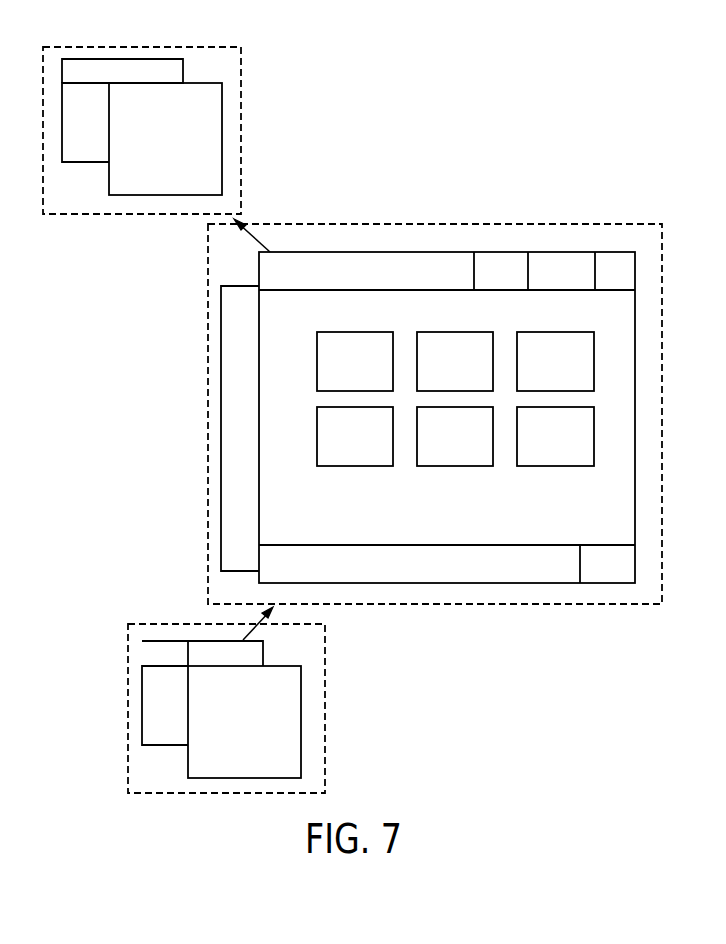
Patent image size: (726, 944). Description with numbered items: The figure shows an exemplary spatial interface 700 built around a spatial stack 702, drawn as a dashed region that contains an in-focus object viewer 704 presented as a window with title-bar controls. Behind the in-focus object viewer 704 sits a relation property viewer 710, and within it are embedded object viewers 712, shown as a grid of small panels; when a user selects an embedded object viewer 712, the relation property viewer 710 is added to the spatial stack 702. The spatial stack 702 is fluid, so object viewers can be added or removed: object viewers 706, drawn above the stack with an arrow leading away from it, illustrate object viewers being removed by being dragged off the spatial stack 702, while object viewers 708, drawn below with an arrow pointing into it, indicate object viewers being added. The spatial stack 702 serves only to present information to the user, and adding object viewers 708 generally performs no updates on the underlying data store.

The spatial interface 700 is at (587, 138).
The spatial stack 702 is at (516, 224).
The in-focus object viewer 704 is at (383, 252).
The object viewers 706 is at (243, 147).
The object viewers 708 is at (327, 713).
The relation property viewer 710 is at (275, 312).
The embedded object viewer 712 is at (317, 362).